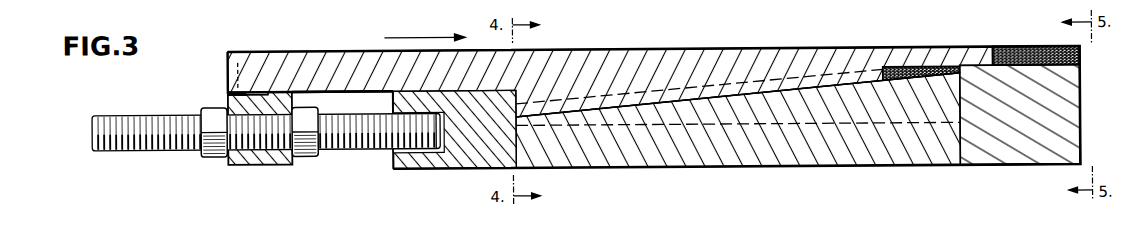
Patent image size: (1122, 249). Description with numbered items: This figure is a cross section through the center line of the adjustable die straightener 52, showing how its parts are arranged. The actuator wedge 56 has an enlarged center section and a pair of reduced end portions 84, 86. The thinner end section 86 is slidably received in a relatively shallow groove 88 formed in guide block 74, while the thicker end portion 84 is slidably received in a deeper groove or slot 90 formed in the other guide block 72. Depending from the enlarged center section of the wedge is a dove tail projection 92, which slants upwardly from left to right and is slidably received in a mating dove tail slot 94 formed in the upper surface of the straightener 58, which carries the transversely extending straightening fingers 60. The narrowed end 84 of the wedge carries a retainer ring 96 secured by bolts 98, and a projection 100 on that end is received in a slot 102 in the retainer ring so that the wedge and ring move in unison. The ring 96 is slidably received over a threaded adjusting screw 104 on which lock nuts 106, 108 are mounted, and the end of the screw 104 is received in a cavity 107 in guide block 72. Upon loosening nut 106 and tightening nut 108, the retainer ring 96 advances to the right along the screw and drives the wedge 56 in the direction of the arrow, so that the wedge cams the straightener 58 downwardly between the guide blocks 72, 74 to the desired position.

The adjustable die straightener 52 is at (803, 44).
The actuator wedge 56 is at (701, 54).
The straightener 58 is at (740, 116).
The straightening fingers 60 is at (783, 153).
The guide block 72 is at (468, 159).
The guide block 74 is at (1003, 168).
The reduced end portion 84 is at (321, 58).
The reduced end portion 86 is at (980, 55).
The shallow groove 88 is at (1017, 57).
The slot 90 is at (402, 82).
The dove tail projection 92 is at (735, 89).
The dove tail slot 94 is at (599, 104).
The retainer ring 96 is at (272, 163).
The bolts 98 is at (238, 60).
The projection 100 is at (265, 88).
The slot 102 is at (228, 90).
The threaded adjusting screw 104 is at (361, 147).
The lock nut 106 is at (307, 155).
The cavity 107 is at (446, 155).
The lock nut 108 is at (217, 155).